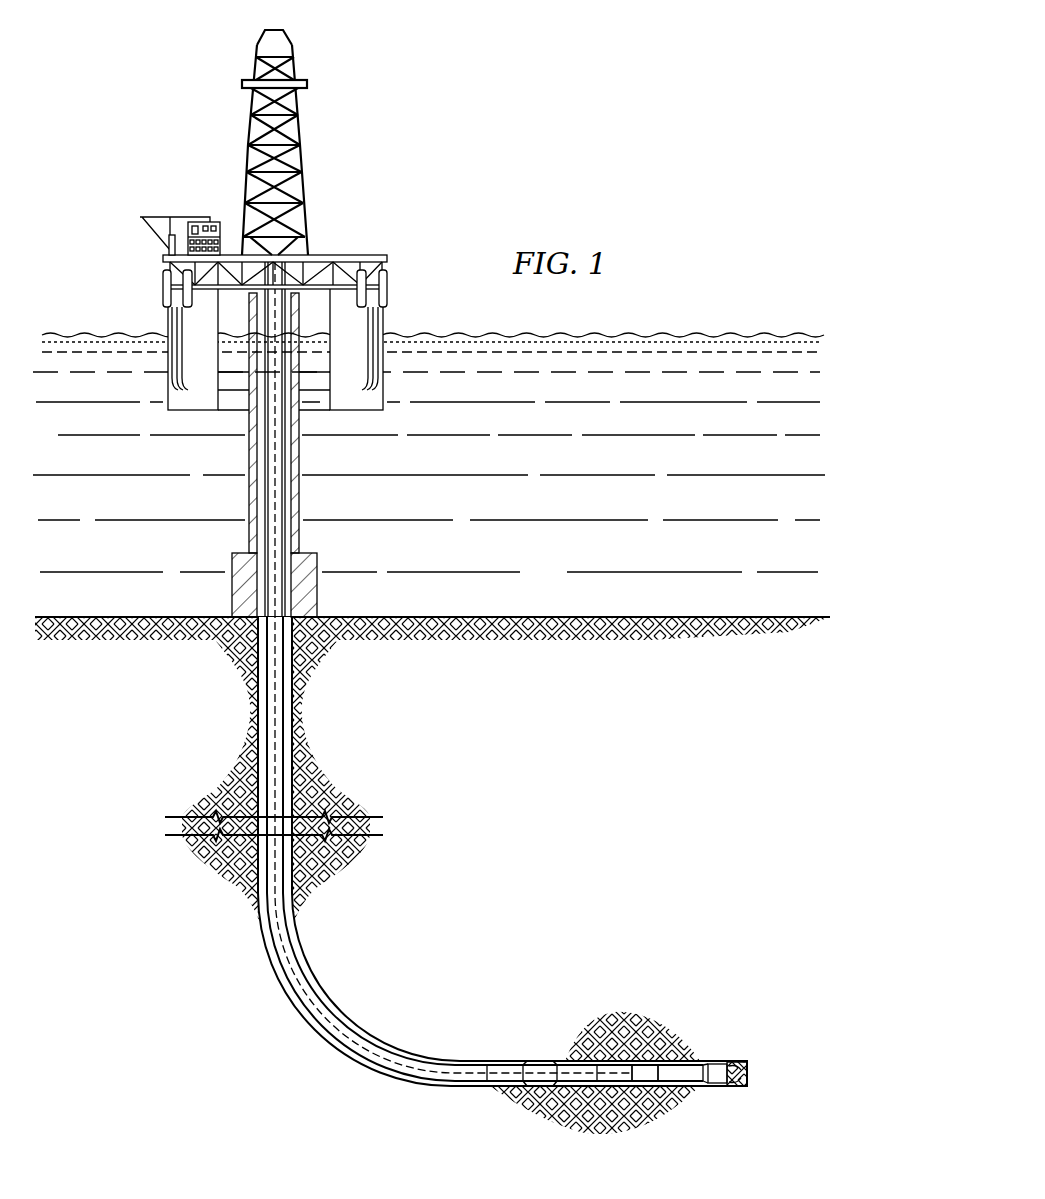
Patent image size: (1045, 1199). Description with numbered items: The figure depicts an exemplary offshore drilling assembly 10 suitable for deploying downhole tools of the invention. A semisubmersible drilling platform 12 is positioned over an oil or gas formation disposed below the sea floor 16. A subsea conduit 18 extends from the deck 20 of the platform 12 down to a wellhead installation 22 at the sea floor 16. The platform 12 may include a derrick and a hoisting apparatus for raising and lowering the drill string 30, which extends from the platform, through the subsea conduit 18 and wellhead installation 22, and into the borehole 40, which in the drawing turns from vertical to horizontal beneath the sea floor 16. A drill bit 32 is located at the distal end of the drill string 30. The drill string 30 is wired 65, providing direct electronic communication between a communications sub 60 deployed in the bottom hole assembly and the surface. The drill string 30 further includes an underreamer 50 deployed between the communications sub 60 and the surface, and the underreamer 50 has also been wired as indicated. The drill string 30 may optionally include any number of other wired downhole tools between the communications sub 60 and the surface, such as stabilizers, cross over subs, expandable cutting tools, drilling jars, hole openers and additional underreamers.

The offshore drilling assembly 10 is at (373, 147).
The semisubmersible drilling platform 12 is at (370, 252).
The deck 20 is at (385, 292).
The drill string 30 is at (286, 420).
The subsea conduit 18 is at (300, 495).
The wellhead installation 22 is at (312, 553).
The sea floor 16 is at (527, 617).
The wiring 65 is at (282, 697).
The borehole 40 is at (258, 719).
The underreamer 50 is at (505, 1064).
The communications sub 60 is at (650, 1068).
The drill bit 32 is at (717, 1064).